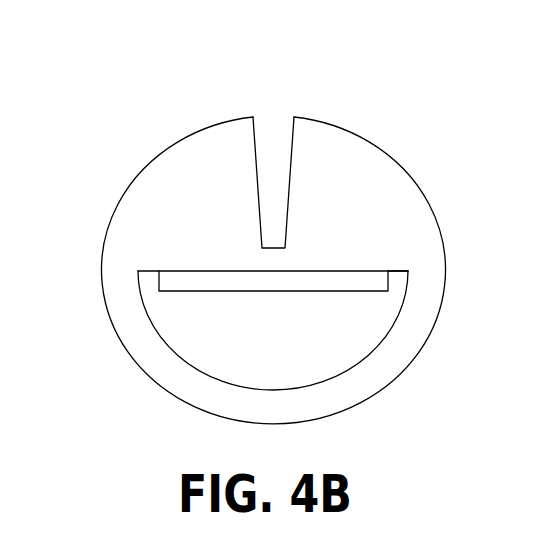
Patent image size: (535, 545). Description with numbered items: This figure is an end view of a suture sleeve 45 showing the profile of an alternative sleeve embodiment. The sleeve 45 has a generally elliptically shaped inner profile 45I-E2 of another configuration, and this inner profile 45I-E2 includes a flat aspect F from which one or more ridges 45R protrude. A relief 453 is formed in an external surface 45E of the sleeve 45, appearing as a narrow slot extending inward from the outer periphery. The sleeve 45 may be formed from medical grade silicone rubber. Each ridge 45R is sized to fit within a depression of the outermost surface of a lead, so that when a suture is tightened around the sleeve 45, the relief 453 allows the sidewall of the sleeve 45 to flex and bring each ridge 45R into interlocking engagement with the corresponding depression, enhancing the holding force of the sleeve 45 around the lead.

The suture sleeve 45 is at (376, 66).
The external surface 45E is at (152, 160).
The relief 453 is at (273, 135).
The ridge 45R is at (333, 283).
The inner profile 45I-E2 is at (158, 311).
The flat aspect F is at (397, 273).